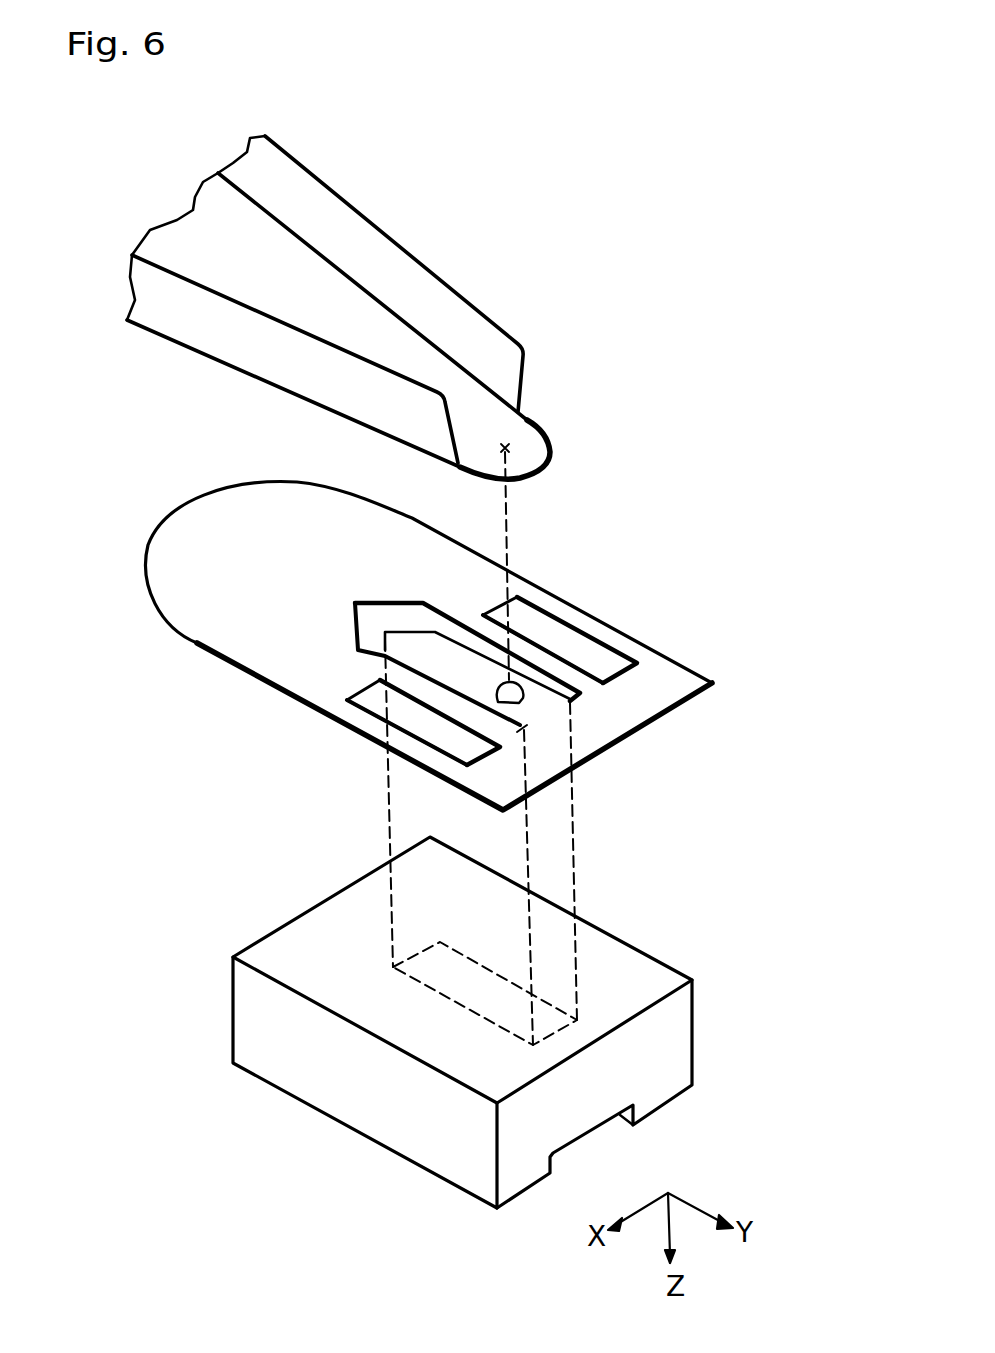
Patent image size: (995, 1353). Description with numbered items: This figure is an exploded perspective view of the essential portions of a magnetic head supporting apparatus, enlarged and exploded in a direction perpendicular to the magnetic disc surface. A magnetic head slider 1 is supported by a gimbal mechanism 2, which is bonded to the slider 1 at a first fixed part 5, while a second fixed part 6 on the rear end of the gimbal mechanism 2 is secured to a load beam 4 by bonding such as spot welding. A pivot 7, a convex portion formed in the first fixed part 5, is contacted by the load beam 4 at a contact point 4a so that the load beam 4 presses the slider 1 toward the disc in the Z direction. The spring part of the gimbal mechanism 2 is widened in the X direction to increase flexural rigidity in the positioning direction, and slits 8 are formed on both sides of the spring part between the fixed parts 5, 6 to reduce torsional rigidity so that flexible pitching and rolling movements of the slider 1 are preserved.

The magnetic head slider 1 is at (693, 1033).
The gimbal mechanism 2 is at (555, 590).
The load beam 4 is at (420, 267).
The contact point 4a is at (505, 448).
The first fixed part 5 is at (413, 653).
The second fixed part 6 is at (218, 508).
The pivot 7 is at (523, 699).
The slits 8 is at (590, 650).